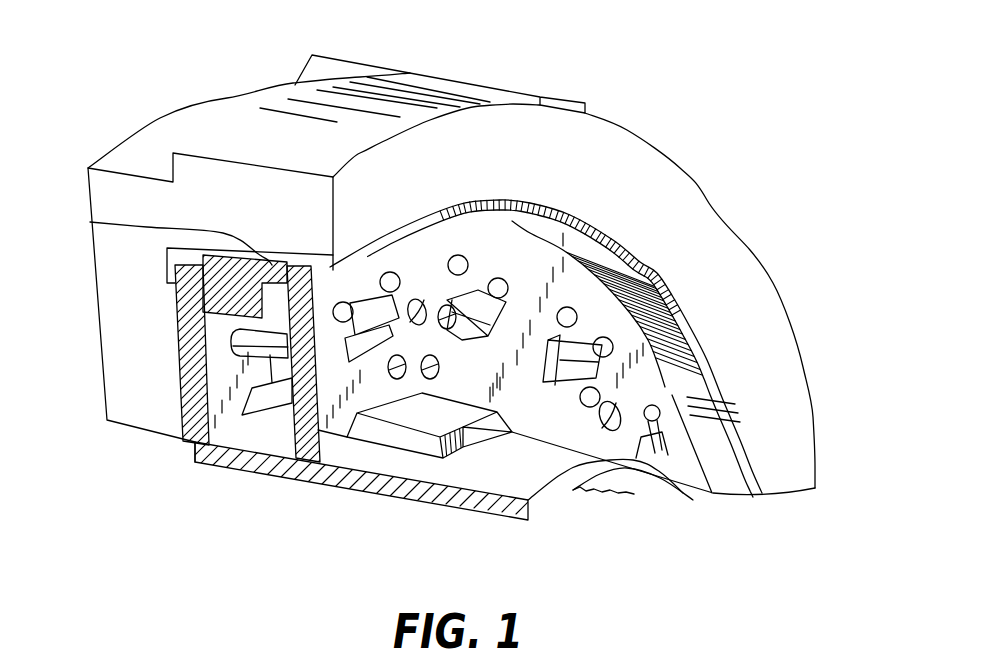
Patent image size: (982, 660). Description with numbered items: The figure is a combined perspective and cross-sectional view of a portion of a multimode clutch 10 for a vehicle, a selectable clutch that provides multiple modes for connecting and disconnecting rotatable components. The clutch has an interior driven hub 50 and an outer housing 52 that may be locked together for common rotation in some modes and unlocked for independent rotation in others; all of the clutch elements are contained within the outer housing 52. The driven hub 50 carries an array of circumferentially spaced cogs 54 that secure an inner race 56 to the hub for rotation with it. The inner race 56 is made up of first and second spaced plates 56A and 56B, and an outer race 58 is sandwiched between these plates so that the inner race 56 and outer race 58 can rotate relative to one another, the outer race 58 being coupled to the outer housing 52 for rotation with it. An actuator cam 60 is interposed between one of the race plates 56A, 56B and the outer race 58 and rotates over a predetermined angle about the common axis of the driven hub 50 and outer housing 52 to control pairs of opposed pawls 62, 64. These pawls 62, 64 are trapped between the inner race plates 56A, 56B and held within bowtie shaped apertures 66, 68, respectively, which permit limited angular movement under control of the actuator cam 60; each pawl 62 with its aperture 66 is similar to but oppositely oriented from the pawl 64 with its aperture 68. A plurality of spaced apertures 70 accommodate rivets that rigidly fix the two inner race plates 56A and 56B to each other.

The multimode clutch 10 is at (118, 101).
The driven hub 50 is at (502, 475).
The outer housing 52 is at (575, 182).
The cogs 54 is at (382, 433).
The inner race 56 is at (302, 370).
The first inner race plate 56A is at (237, 428).
The second inner race plate 56B is at (330, 440).
The outer race 58 is at (207, 310).
The actuator cam 60 is at (92, 222).
The pawl 62 is at (233, 342).
The pawl 64 is at (465, 290).
The bowtie shaped aperture 66 is at (345, 300).
The bowtie shaped aperture 68 is at (470, 275).
The spaced apertures 70 is at (415, 330).